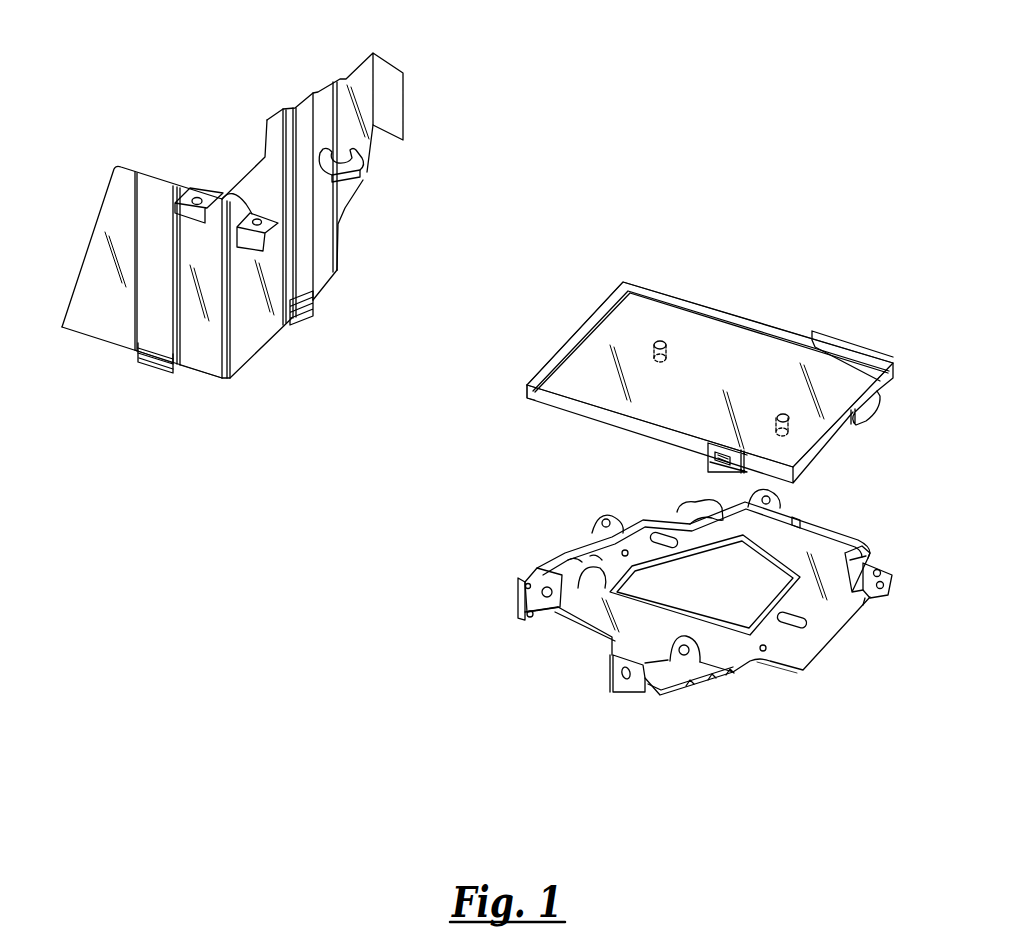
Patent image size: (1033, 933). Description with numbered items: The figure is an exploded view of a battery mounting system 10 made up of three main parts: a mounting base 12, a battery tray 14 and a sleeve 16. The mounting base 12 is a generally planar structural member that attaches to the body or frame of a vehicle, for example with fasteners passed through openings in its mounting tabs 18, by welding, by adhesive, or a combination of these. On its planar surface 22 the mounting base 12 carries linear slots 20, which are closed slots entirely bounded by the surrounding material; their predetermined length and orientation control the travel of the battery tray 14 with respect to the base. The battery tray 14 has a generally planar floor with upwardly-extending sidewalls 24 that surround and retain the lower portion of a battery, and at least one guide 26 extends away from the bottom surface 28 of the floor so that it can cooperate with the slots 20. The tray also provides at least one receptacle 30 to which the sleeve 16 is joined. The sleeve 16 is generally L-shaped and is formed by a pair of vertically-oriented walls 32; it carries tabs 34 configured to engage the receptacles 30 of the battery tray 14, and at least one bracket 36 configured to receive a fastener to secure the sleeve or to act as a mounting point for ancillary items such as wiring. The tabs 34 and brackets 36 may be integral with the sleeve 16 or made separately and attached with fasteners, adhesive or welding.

The battery mounting system 10 is at (610, 72).
The mounting base 12 is at (848, 533).
The battery tray 14 is at (550, 356).
The sleeve 16 is at (250, 354).
The mounting tabs 18 is at (683, 508).
The linear slots 20 is at (654, 532).
The planar surface 22 is at (780, 659).
The sidewalls 24 is at (597, 314).
The guide 26 is at (668, 346).
The bottom surface 28 is at (540, 405).
The receptacle 30 is at (879, 413).
The walls 32 is at (145, 259).
The tabs 34 is at (160, 373).
The bracket 36 is at (195, 190).